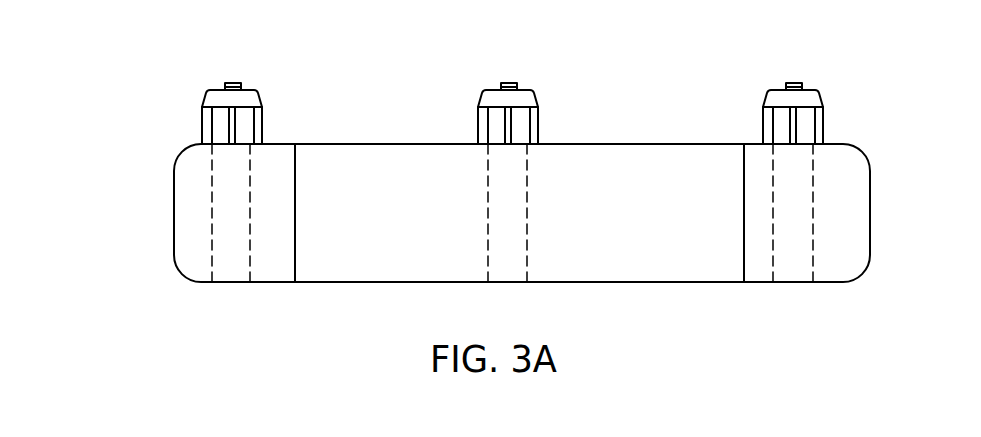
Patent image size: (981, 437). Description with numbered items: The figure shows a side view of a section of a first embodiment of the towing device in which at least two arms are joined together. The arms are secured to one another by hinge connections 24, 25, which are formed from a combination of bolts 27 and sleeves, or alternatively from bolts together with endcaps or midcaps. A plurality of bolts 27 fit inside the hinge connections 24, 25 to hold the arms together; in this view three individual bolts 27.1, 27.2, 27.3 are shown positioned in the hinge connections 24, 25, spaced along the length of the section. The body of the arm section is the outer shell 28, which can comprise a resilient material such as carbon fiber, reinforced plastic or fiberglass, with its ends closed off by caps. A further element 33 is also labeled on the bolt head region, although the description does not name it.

The hinge connection 24 is at (140, 268).
The hinge connection 25 is at (448, 100).
The bolts 27 is at (156, 157).
The bolt 27.1 is at (220, 208).
The bolt 27.2 is at (503, 228).
The bolt 27.3 is at (788, 228).
The outer shell 28 is at (267, 257).
The connector cap 33 is at (218, 98).